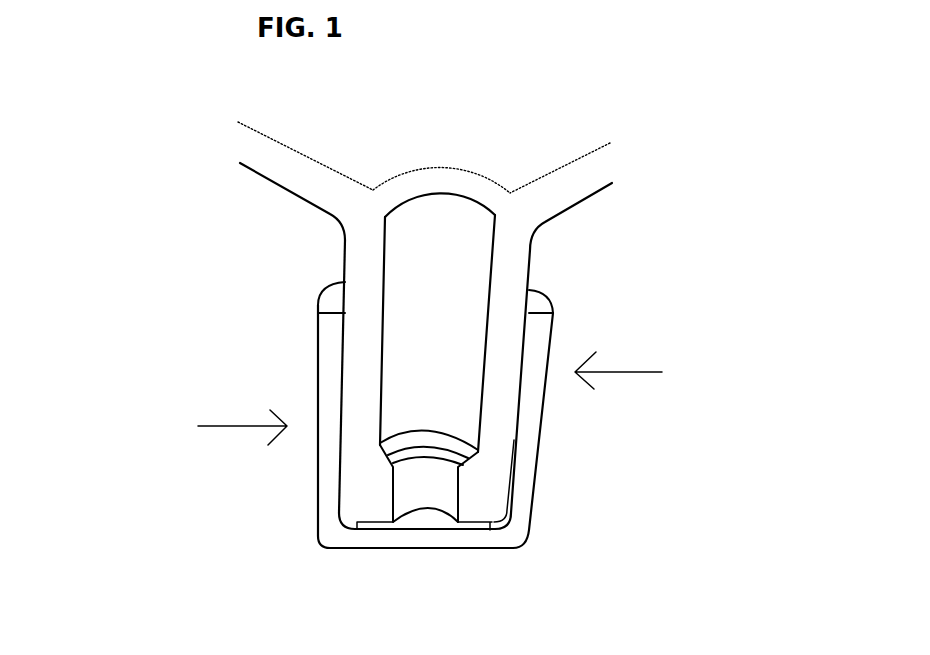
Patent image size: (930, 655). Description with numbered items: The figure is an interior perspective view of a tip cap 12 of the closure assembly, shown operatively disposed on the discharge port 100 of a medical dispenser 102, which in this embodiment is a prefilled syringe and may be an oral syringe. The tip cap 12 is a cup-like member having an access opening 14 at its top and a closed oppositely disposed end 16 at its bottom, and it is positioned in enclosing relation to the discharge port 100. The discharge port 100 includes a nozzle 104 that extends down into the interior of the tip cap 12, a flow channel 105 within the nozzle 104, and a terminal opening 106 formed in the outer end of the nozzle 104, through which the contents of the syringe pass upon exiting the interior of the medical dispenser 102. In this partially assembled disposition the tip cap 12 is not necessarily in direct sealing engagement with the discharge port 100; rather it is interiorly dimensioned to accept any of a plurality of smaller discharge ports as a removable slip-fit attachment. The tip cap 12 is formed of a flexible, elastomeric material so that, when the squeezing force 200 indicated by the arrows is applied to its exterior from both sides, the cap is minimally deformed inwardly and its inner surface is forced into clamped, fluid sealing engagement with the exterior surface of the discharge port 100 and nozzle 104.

The tip cap 12 is at (538, 462).
The access opening 14 is at (553, 313).
The closed oppositely disposed end 16 is at (482, 550).
The discharge port 100 is at (362, 247).
The medical dispenser 102 is at (588, 153).
The nozzle 104 is at (360, 378).
The flow channel 105 is at (450, 218).
The terminal opening 106 is at (426, 478).
The squeezing force 200 is at (646, 372).